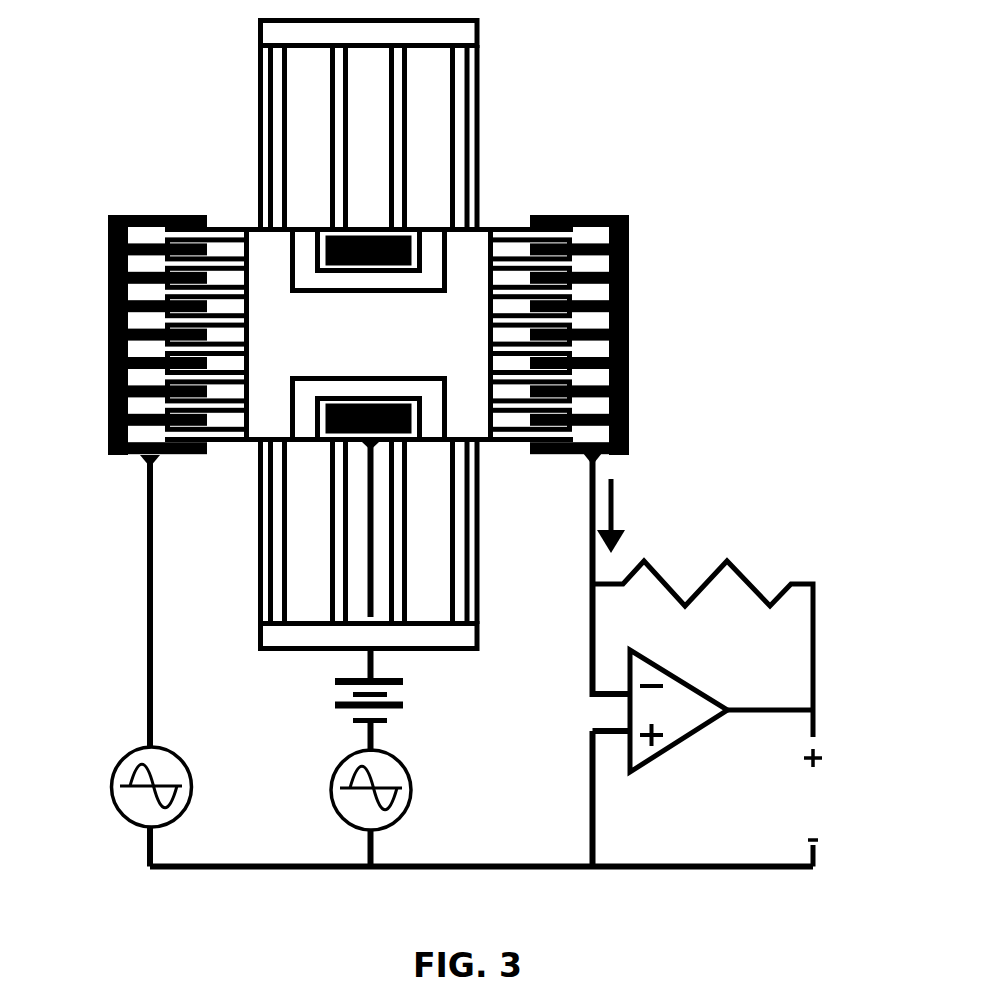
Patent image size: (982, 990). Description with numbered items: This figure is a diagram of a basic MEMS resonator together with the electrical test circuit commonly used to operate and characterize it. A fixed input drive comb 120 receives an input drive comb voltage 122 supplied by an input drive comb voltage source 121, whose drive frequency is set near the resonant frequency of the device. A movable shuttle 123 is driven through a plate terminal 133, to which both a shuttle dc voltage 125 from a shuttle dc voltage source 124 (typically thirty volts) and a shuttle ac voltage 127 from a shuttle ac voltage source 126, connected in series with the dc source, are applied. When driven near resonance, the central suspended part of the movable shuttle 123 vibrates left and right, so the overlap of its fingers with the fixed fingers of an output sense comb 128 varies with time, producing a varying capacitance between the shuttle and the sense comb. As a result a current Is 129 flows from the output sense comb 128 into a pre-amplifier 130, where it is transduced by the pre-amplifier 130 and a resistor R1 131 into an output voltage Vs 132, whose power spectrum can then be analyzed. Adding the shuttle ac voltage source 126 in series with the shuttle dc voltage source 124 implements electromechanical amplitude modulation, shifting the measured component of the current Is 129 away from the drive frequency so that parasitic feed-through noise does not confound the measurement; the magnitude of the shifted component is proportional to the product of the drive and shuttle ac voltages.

The input drive comb 120 is at (129, 335).
The input drive comb voltage source 121 is at (122, 807).
The input drive comb voltage 122 is at (147, 572).
The movable shuttle 123 is at (369, 335).
The shuttle dc voltage source 124 is at (398, 702).
The shuttle dc voltage 125 is at (367, 663).
The shuttle ac voltage source 126 is at (396, 808).
The shuttle ac voltage 127 is at (367, 740).
The output sense comb 128 is at (611, 334).
The current Is 129 is at (637, 516).
The pre-amplifier 130 is at (721, 731).
The resistor R1 131 is at (703, 632).
The output voltage Vs 132 is at (813, 808).
The plate terminal 133 is at (392, 543).